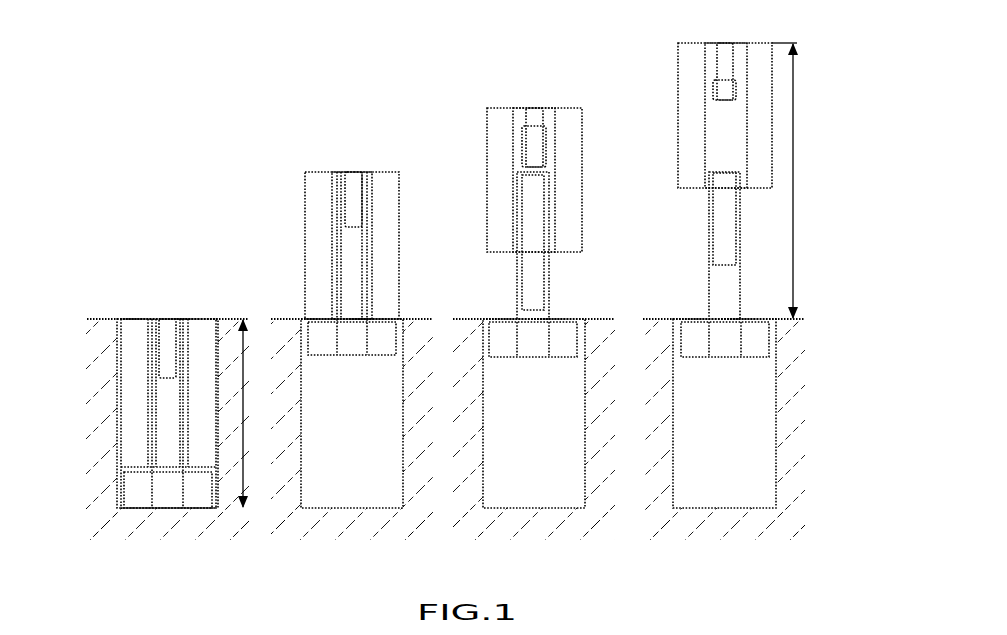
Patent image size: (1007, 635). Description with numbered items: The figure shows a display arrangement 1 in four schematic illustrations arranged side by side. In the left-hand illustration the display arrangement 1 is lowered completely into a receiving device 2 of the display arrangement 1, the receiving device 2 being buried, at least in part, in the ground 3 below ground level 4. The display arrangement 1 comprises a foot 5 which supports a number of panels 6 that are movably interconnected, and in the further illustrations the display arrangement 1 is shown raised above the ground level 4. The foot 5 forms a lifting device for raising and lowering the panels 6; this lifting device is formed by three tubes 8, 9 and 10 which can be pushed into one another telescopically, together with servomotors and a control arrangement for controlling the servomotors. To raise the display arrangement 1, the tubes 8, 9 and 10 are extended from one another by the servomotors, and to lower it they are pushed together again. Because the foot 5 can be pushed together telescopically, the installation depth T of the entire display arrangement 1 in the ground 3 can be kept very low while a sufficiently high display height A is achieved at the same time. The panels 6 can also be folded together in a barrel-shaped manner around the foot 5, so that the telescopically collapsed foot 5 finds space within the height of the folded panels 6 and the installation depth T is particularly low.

The display arrangement 1 is at (133, 180).
The receiving device 2 is at (114, 507).
The ground 3 is at (88, 388).
The ground level 4 is at (108, 318).
The foot 5 is at (153, 509).
The panels 6 is at (314, 230).
The tube 8 is at (726, 287).
The tube 9 is at (724, 124).
The tube 10 is at (724, 65).
The installation depth T is at (253, 413).
The display height A is at (795, 180).